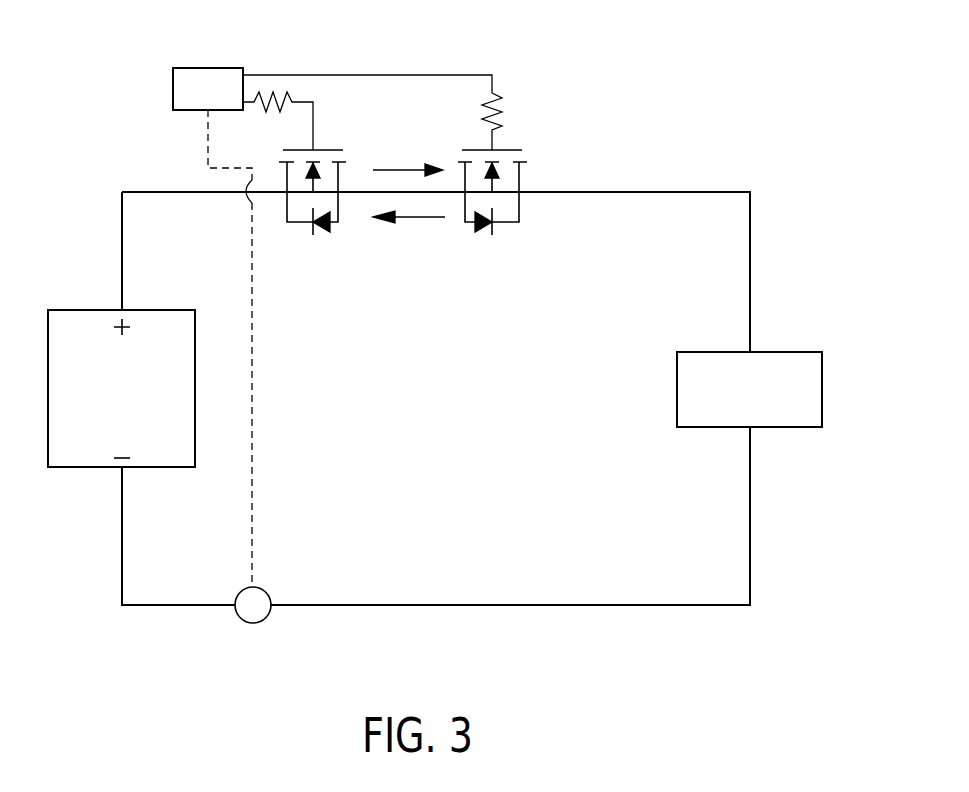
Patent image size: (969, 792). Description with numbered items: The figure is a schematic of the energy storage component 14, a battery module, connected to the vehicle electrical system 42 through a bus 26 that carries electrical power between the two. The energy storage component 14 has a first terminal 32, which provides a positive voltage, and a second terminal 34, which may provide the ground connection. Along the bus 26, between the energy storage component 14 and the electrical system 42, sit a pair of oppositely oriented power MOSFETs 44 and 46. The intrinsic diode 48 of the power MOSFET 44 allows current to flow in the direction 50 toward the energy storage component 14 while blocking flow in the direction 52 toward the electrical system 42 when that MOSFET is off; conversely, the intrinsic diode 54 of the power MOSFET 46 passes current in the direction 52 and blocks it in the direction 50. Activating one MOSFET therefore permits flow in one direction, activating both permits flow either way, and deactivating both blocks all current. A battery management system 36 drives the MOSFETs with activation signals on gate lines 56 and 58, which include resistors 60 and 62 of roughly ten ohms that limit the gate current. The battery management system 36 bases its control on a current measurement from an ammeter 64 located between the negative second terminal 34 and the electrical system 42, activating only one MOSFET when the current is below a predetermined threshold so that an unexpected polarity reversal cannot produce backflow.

The energy storage component 14 is at (48, 388).
The bus 26 is at (636, 192).
The first terminal 32 is at (118, 321).
The second terminal 34 is at (118, 468).
The battery management system 36 is at (207, 68).
The vehicle electrical system 42 is at (770, 351).
The power MOSFET 44 is at (325, 149).
The power MOSFET 46 is at (500, 149).
The intrinsic diode 48 is at (322, 233).
The direction 50 is at (418, 218).
The direction 52 is at (423, 167).
The intrinsic diode 54 is at (486, 233).
The gate line 56 is at (250, 104).
The gate line 58 is at (368, 75).
The resistor 60 is at (294, 99).
The resistor 62 is at (496, 100).
The ammeter 64 is at (240, 618).